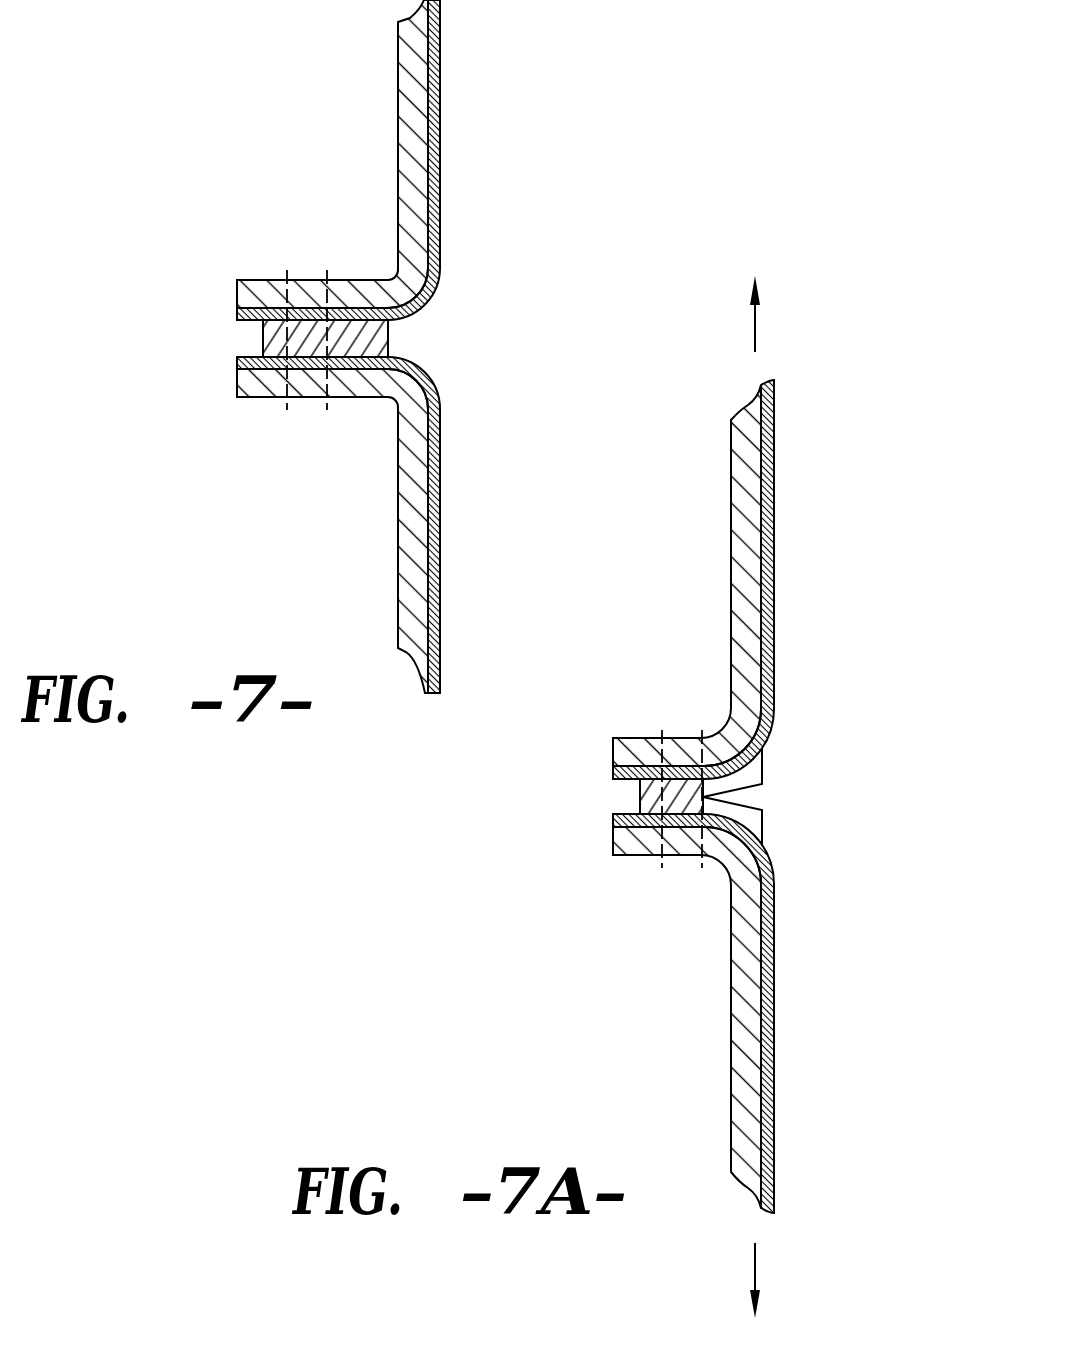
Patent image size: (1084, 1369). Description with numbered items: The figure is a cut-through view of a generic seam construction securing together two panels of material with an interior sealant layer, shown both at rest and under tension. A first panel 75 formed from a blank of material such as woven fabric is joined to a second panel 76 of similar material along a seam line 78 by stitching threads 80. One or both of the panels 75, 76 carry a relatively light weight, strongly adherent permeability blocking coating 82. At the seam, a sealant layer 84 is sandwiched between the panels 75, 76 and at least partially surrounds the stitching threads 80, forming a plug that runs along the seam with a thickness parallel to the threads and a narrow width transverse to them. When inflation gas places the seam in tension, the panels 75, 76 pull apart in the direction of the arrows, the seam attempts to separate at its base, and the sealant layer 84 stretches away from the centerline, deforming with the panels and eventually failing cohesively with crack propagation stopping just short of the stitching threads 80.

In FIG. 7, the first panel 75 is at (397, 600).
In FIG. 7A, the first panel 75 is at (730, 1065).
In FIG. 7, the second panel 76 is at (397, 107).
In FIG. 7A, the second panel 76 is at (730, 530).
In FIG. 7, the seam line 78 is at (420, 334).
In FIG. 7A, the seam line 78 is at (798, 771).
In FIG. 7, the stitching threads 80 is at (327, 278).
In FIG. 7A, the stitching threads 80 is at (705, 736).
In FIG. 7, the coating 82 is at (442, 163).
In FIG. 7A, the coating 82 is at (776, 585).
In FIG. 7, the sealant layer 84 is at (262, 342).
In FIG. 7A, the sealant layer 84 is at (639, 795).